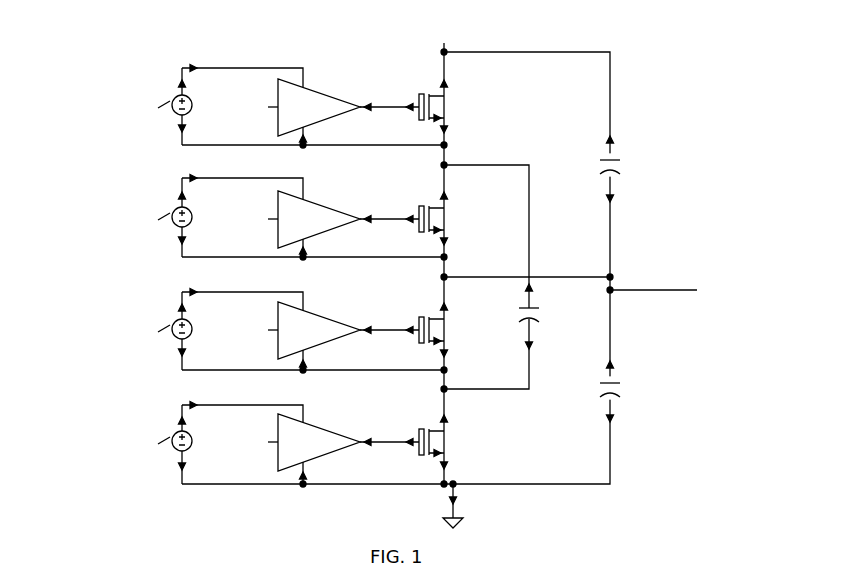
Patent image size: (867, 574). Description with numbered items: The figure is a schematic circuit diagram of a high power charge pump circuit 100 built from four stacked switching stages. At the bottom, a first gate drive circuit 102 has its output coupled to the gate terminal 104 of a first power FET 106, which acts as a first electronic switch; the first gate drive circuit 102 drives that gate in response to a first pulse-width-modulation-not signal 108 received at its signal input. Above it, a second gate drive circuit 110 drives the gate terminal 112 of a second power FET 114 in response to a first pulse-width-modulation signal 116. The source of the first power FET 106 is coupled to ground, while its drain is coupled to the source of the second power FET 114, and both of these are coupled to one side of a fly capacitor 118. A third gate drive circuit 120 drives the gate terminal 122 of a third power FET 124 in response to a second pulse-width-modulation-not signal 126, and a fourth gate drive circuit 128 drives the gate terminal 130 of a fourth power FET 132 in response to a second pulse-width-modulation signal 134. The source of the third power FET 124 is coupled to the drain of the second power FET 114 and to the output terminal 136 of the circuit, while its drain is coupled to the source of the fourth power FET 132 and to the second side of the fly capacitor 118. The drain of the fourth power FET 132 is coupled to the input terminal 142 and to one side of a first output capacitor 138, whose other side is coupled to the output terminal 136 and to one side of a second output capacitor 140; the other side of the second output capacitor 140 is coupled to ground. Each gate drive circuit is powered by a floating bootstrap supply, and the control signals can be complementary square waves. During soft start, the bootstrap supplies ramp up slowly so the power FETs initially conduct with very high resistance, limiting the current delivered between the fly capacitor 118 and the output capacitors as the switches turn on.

The high power charge pump circuit 100 is at (129, 60).
The first gate drive circuit 102 is at (323, 438).
The gate terminal of the first power FET 104 is at (418, 430).
The first power field-effect transistor 106 is at (440, 430).
The first PWMN signal 108 is at (228, 450).
The second gate drive circuit 110 is at (323, 326).
The gate terminal of the second power FET 112 is at (418, 318).
The second power FET 114 is at (440, 318).
The first PWM signal 116 is at (235, 338).
The fly capacitor 118 is at (535, 323).
The third gate drive circuit 120 is at (323, 215).
The gate terminal of the third power FET 122 is at (418, 207).
The third power FET 124 is at (440, 207).
The second PWMN signal 126 is at (230, 225).
The fourth gate drive circuit 128 is at (323, 103).
The gate terminal of the fourth power FET 130 is at (418, 95).
The fourth power FET 132 is at (440, 95).
The second PWM signal 134 is at (237, 113).
The output terminal 136 is at (614, 292).
The first output capacitor 138 is at (614, 158).
The second output capacitor 140 is at (613, 382).
The input terminal 142 is at (470, 30).